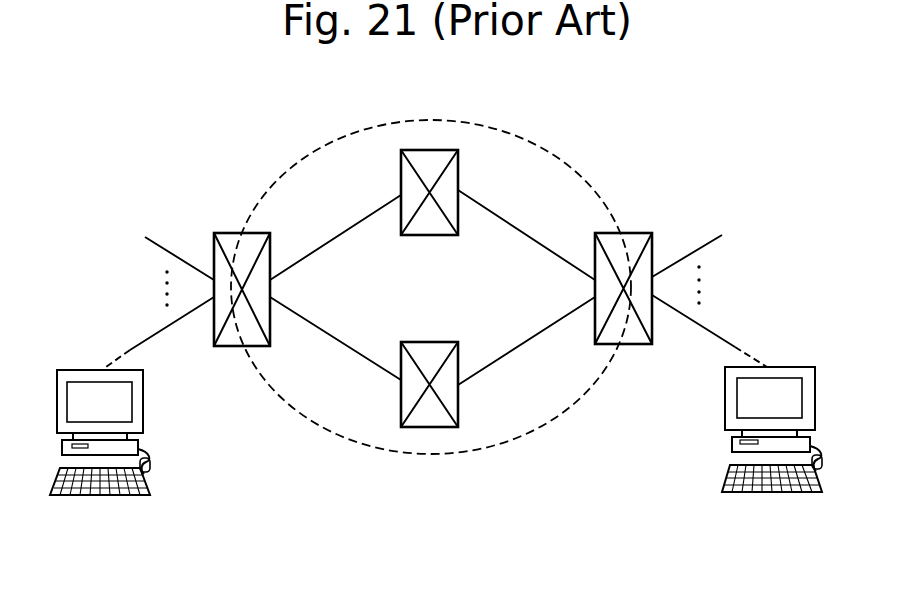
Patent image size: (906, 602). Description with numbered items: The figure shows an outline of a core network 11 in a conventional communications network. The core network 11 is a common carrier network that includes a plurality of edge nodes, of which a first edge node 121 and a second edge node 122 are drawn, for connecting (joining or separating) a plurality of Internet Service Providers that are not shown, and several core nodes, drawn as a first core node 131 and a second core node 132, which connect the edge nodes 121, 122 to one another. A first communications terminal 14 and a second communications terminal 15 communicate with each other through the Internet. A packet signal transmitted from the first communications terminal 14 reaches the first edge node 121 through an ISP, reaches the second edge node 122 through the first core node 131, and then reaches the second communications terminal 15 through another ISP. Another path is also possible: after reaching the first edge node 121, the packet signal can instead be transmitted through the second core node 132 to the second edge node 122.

The core network 11 is at (553, 151).
The first edge node 121 is at (232, 233).
The second edge node 122 is at (623, 233).
The first core node 131 is at (458, 180).
The second core node 132 is at (401, 402).
The first communications terminal 14 is at (82, 370).
The second communications terminal 15 is at (793, 367).